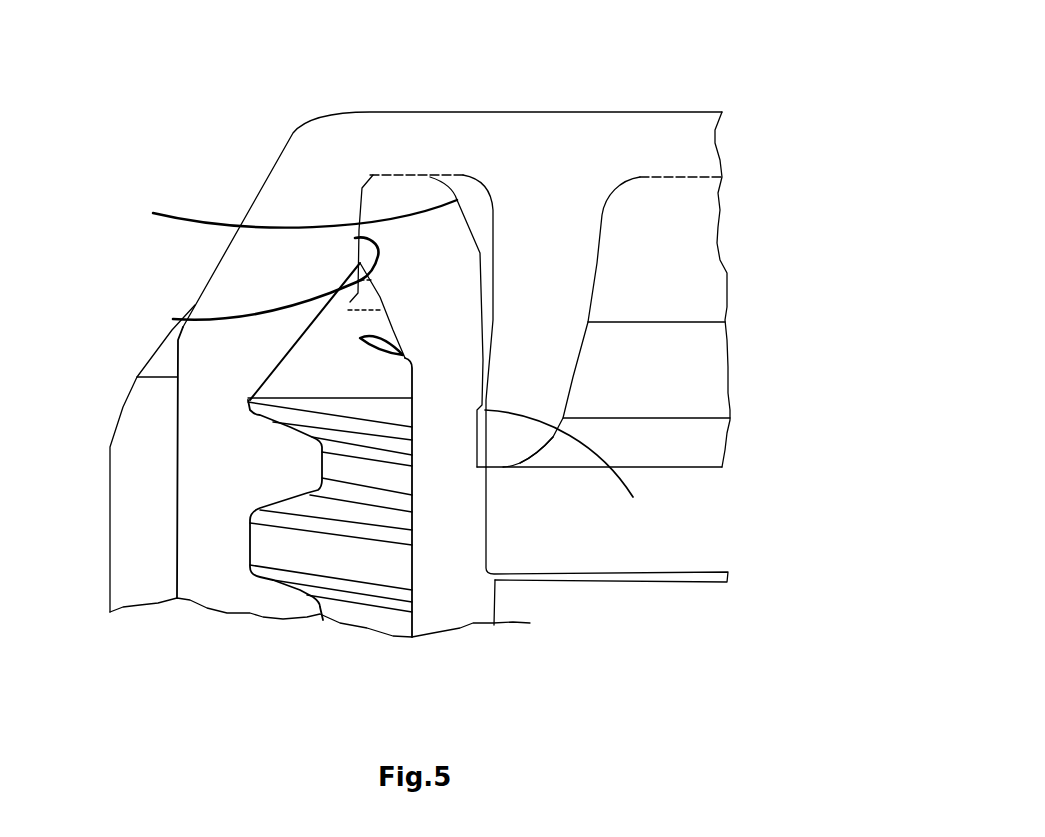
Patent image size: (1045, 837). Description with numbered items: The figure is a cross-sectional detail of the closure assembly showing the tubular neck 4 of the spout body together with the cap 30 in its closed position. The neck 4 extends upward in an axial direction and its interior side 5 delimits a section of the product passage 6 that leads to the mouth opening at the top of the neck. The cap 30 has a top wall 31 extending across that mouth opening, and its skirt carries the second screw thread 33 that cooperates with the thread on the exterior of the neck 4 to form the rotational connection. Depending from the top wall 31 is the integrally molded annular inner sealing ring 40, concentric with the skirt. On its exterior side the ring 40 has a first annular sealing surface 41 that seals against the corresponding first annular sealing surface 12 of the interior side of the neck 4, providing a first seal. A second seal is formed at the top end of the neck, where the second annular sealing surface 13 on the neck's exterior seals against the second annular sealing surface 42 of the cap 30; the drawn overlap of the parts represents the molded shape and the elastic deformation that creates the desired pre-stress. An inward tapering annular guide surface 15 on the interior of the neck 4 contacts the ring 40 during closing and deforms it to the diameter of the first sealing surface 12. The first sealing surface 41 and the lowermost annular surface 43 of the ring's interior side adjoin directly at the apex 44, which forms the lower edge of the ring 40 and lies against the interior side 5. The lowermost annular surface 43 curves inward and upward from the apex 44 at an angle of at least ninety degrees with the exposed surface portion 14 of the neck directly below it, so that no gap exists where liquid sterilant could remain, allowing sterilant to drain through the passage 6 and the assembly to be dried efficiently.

The cap 30 is at (295, 107).
The top wall 31 is at (662, 143).
The second screw thread 33 is at (267, 463).
The inner sealing ring 40 is at (562, 262).
The first annular sealing surface 41 is at (413, 452).
The second annular sealing surface 42 is at (173, 319).
The lowermost annular surface 43 is at (530, 458).
The apex 44 is at (475, 475).
The first annular sealing surface 12 is at (572, 471).
The second annular sealing surface 13 is at (355, 238).
The exposed surface portion 14 is at (488, 495).
The inward tapering annular guide surface 15 is at (290, 211).
The tubular neck 4 is at (453, 610).
The interior side 5 is at (497, 600).
The product passage 6 is at (722, 522).